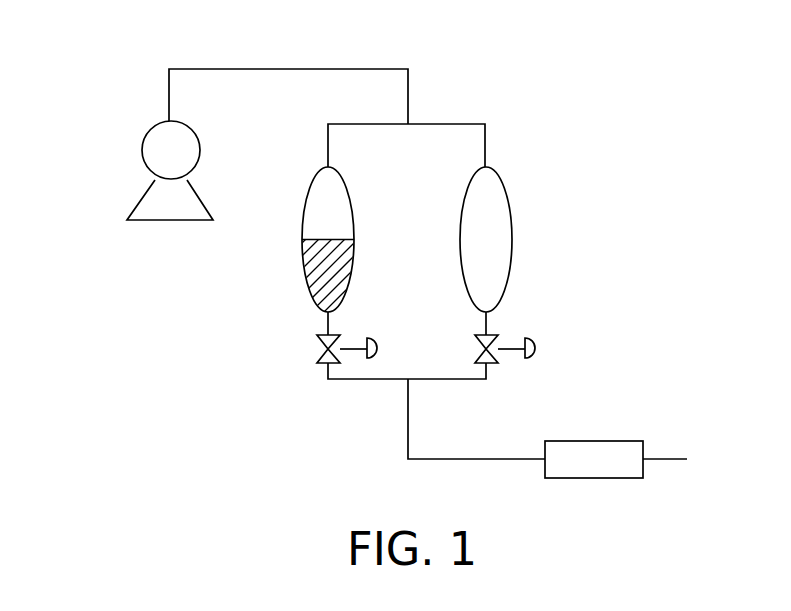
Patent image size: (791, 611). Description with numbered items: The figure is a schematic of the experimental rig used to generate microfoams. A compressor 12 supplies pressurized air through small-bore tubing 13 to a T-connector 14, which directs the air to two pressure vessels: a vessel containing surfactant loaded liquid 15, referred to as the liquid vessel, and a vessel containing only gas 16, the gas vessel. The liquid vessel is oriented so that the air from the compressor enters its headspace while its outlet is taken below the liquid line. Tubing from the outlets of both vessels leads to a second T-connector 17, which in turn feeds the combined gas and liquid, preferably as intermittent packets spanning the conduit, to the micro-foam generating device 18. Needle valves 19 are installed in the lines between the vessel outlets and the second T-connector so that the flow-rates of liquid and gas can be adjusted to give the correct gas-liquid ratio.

The compressor 12 is at (142, 150).
The tubing 13 is at (291, 69).
The T-connector 14 is at (411, 119).
The vessel containing surfactant loaded liquid 15 is at (304, 250).
The vessel containing only gas 16 is at (512, 207).
The second T-connector 17 is at (400, 388).
The micro-foam generating device 18 is at (600, 432).
The needle valves 19 is at (374, 339).